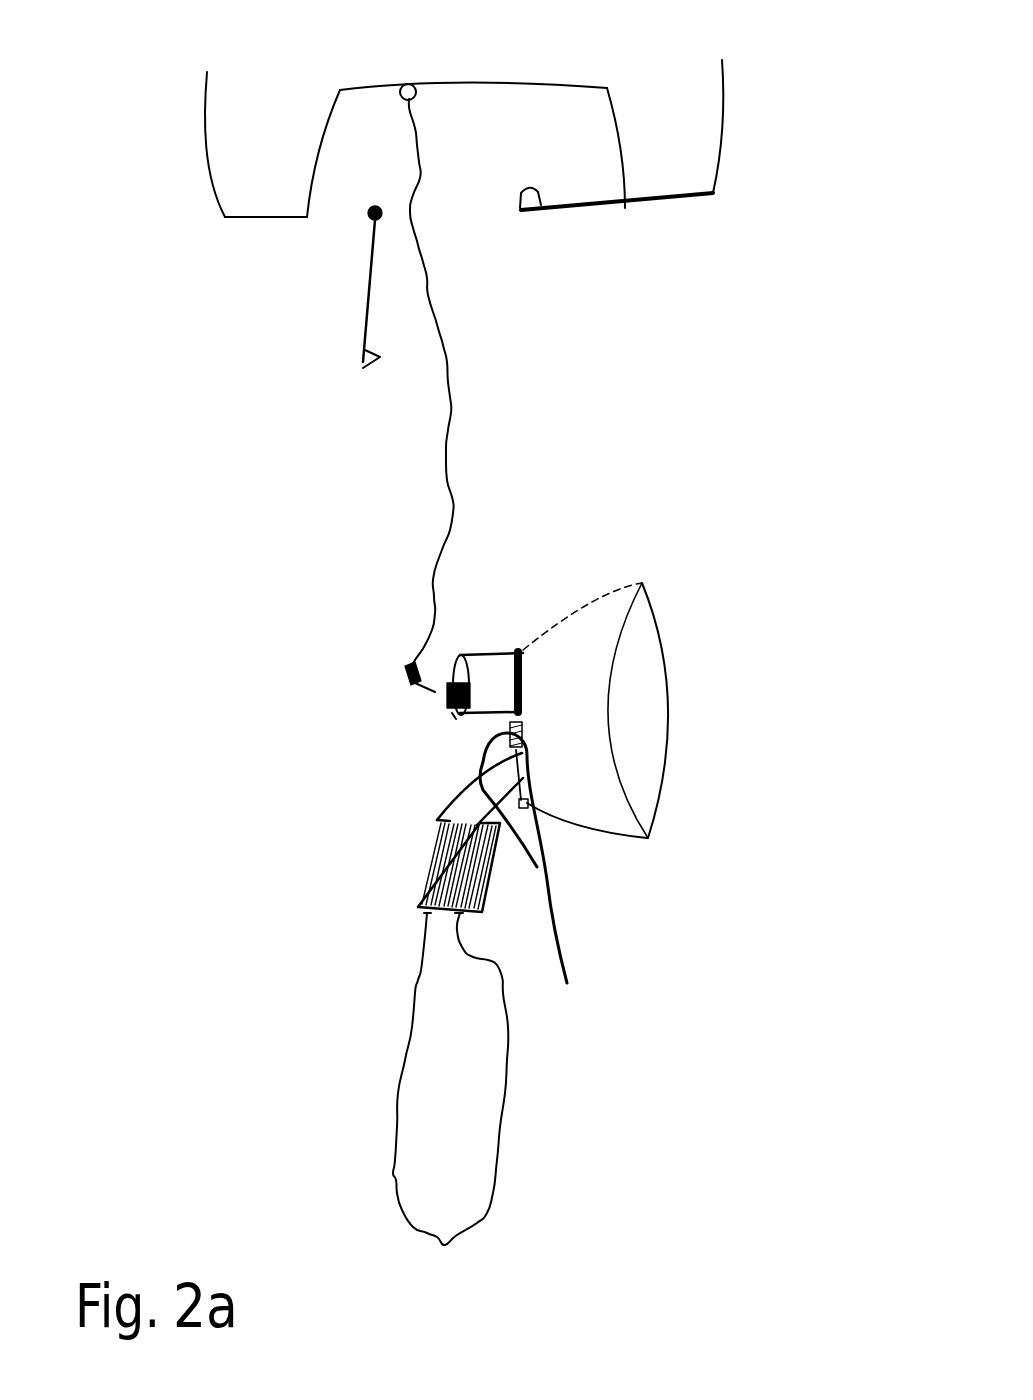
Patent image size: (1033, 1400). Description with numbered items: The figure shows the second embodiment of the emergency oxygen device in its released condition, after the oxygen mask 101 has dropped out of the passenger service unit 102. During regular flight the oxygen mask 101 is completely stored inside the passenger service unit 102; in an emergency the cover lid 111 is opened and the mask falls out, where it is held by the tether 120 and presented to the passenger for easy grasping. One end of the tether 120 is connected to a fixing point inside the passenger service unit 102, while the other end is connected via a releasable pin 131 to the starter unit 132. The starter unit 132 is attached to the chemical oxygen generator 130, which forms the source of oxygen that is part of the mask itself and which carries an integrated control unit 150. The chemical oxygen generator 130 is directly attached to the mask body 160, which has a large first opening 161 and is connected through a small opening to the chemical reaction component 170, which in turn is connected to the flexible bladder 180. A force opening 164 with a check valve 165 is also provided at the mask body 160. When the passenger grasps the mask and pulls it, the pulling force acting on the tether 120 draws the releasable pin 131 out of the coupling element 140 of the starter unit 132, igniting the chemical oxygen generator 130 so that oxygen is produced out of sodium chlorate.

The oxygen mask 101 is at (300, 907).
The passenger service unit 102 is at (597, 54).
The cover lid 111 is at (368, 300).
The tether 120 is at (449, 430).
The chemical oxygen generator 130 is at (495, 673).
The releasable pin 131 is at (417, 687).
The starter unit 132 is at (455, 713).
The coupling element 140 is at (445, 700).
The control unit 150 is at (523, 655).
The mask body 160 is at (565, 723).
The first opening 161 is at (648, 713).
The force opening 164 is at (537, 867).
The check valve 165 is at (554, 872).
The chemical reaction component 170 is at (447, 860).
The flexible bladder 180 is at (468, 1089).